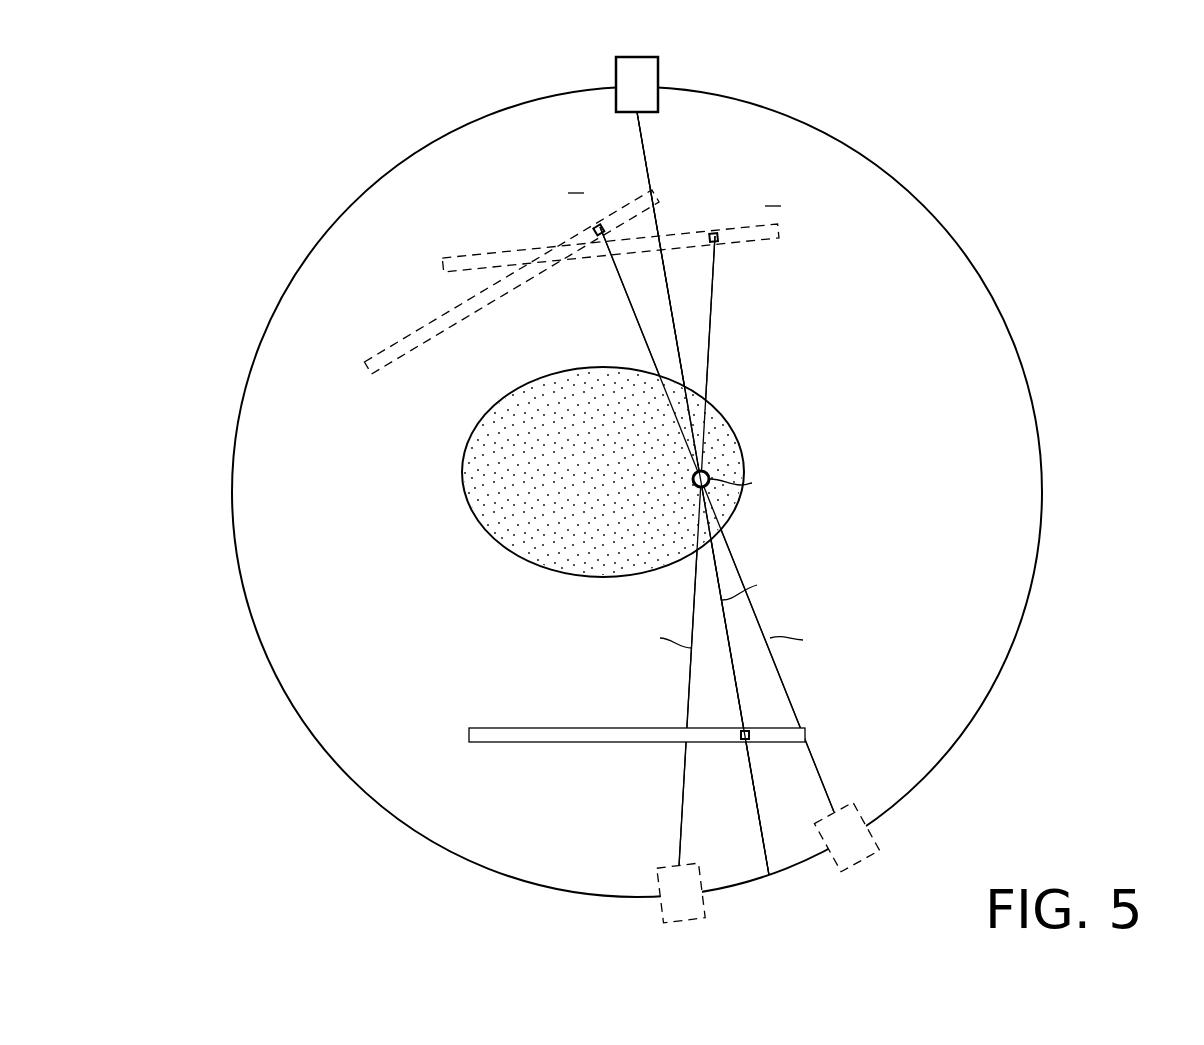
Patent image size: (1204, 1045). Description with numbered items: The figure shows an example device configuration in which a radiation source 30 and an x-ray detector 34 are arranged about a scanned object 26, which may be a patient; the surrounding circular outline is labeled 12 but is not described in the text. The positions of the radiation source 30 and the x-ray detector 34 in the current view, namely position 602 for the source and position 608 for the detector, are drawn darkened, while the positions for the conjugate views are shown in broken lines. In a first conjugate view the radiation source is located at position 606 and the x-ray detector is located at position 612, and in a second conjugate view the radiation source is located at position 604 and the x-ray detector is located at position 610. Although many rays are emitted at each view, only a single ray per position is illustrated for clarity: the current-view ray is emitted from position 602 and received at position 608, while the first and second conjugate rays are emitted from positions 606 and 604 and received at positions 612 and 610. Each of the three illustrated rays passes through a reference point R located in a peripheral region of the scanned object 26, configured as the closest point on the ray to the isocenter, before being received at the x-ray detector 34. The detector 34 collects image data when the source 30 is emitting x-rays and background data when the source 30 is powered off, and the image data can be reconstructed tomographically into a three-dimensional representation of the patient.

The gantry bore 12 is at (313, 191).
The scanned object 26 is at (433, 481).
The radiation source 30 is at (624, 475).
The x-ray detector 34 is at (570, 493).
The radiation source position in current view 602 is at (616, 75).
The radiation source position in second conjugate view 604 is at (852, 870).
The radiation source position in first conjugate view 606 is at (658, 905).
The x-ray detector position in current view 608 is at (513, 745).
The x-ray detector position in second conjugate view 610 is at (483, 253).
The x-ray detector position in first conjugate view 612 is at (397, 342).